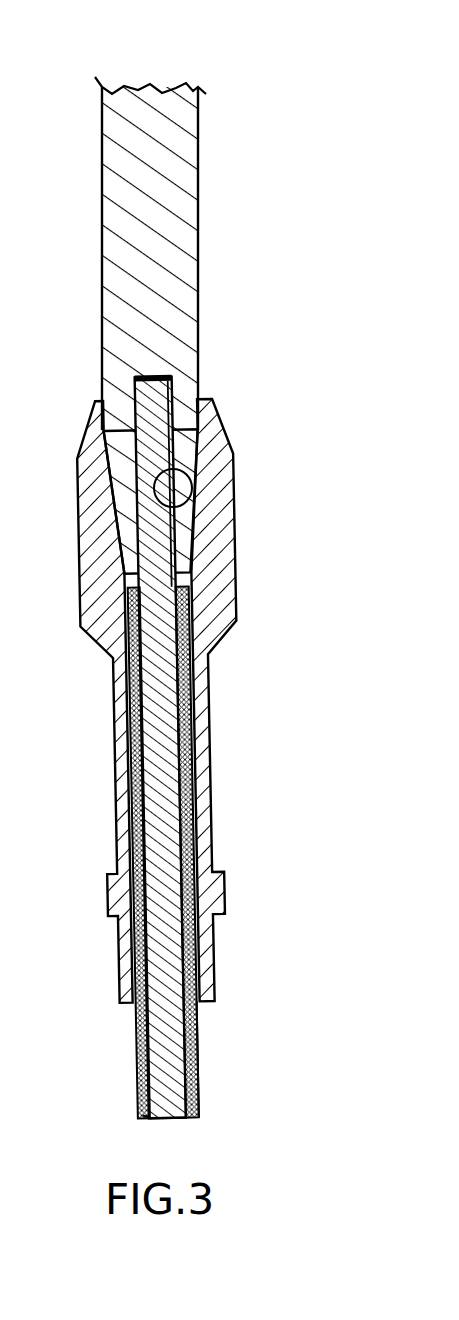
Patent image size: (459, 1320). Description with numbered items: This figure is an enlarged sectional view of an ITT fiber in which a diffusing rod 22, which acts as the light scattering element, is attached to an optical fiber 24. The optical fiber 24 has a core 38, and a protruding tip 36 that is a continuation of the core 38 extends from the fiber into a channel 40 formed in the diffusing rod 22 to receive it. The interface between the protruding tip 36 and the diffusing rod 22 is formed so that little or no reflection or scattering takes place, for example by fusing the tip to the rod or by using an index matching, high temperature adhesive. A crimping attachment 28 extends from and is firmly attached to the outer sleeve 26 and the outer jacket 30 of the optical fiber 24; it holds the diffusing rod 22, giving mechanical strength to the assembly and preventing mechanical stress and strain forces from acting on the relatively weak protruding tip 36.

The diffusing rod 22 is at (178, 153).
The optical fiber 24 is at (150, 762).
The outer sleeve 26 is at (200, 1030).
The crimping attachment 28 is at (238, 556).
The outer jacket 30 is at (197, 1077).
The protruding tip 36 is at (163, 430).
The core 38 is at (150, 377).
The channel 40 is at (180, 505).